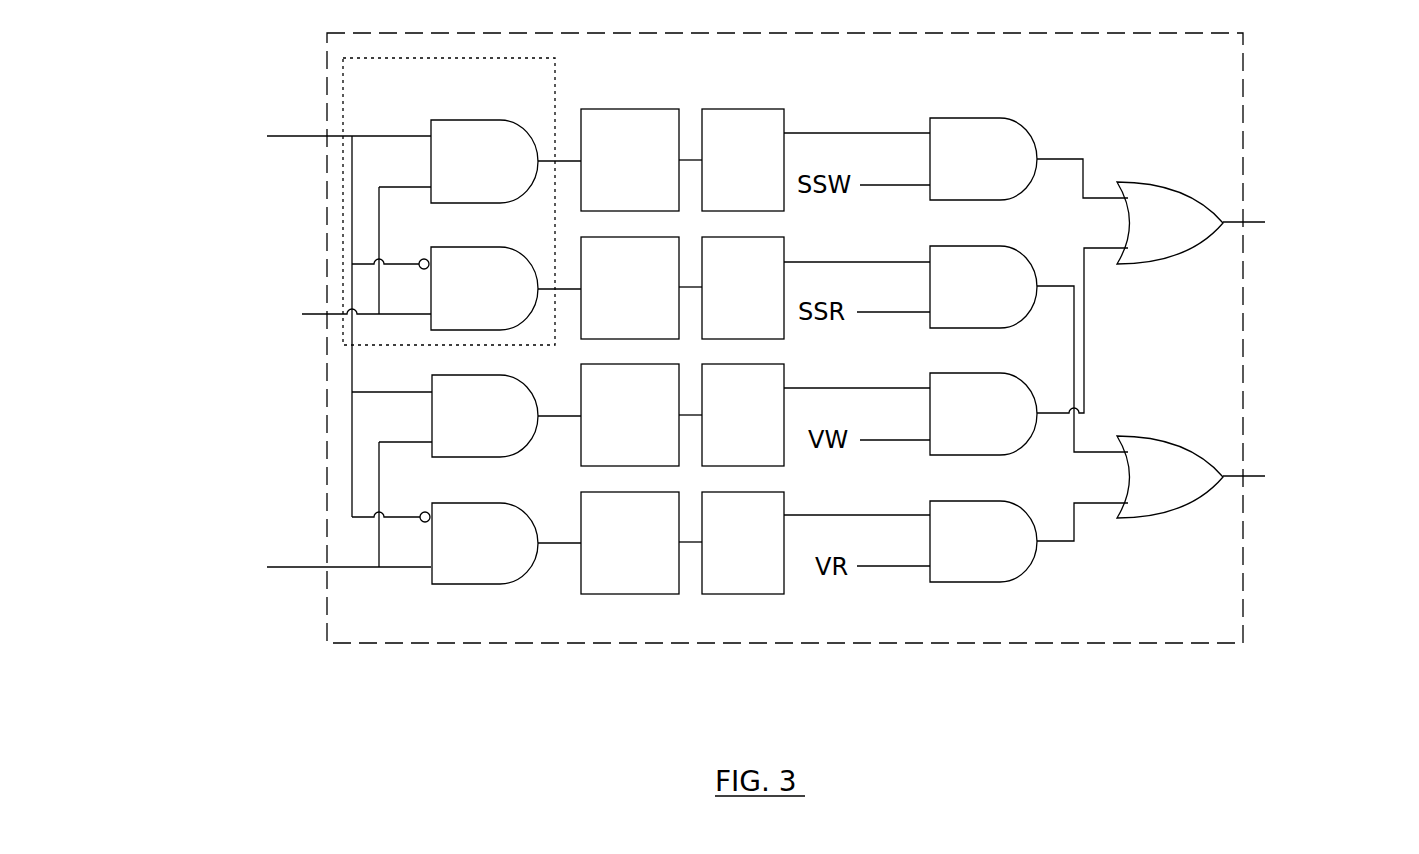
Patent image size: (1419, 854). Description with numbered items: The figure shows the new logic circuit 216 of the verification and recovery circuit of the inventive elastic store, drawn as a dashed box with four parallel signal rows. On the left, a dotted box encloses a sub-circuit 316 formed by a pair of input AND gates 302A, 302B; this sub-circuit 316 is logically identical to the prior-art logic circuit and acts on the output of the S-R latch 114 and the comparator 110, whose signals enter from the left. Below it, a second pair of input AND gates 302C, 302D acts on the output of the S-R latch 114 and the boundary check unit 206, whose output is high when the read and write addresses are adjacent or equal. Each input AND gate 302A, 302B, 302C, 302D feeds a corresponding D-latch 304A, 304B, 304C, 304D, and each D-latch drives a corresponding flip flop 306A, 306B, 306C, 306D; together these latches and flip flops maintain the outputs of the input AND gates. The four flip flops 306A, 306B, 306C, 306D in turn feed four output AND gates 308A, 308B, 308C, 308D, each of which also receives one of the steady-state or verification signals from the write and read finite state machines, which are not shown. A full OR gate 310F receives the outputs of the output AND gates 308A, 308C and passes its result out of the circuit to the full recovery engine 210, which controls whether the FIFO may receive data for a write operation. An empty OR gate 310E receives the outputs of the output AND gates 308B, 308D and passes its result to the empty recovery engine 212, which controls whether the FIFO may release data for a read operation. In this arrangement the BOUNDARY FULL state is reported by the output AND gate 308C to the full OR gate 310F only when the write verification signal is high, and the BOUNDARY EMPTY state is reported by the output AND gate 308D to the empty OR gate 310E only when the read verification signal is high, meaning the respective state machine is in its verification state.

The logic circuit 216 is at (1194, 632).
The sub-circuit 316 is at (392, 123).
The S-R latch 114 is at (279, 136).
The comparator 110 is at (280, 314).
The boundary check unit 206 is at (271, 568).
The full recovery engine 210 is at (1320, 220).
The empty recovery engine 212 is at (1320, 474).
The input AND gate 302A is at (451, 173).
The input AND gate 302B is at (451, 301).
The input AND gate 302C is at (451, 428).
The input AND gate 302D is at (451, 555).
The D-latch 304A is at (601, 204).
The D-latch 304B is at (601, 332).
The D-latch 304C is at (601, 459).
The D-latch 304D is at (601, 587).
The flip flop 306A is at (714, 202).
The flip flop 306B is at (714, 330).
The flip flop 306C is at (714, 457).
The flip flop 306D is at (714, 585).
The output AND gate 308A is at (944, 172).
The output AND gate 308B is at (944, 299).
The output AND gate 308C is at (944, 426).
The output AND gate 308D is at (944, 554).
The full OR gate 310F is at (1141, 235).
The empty OR gate 310E is at (1141, 489).